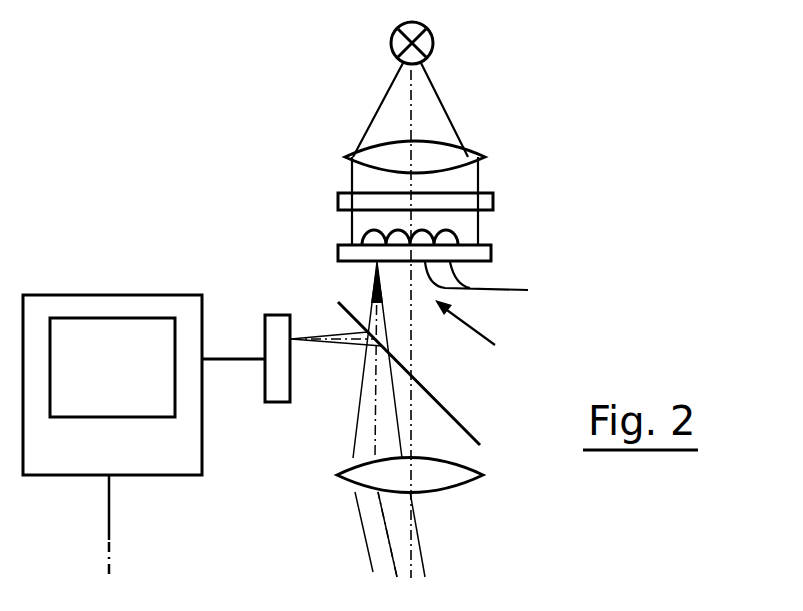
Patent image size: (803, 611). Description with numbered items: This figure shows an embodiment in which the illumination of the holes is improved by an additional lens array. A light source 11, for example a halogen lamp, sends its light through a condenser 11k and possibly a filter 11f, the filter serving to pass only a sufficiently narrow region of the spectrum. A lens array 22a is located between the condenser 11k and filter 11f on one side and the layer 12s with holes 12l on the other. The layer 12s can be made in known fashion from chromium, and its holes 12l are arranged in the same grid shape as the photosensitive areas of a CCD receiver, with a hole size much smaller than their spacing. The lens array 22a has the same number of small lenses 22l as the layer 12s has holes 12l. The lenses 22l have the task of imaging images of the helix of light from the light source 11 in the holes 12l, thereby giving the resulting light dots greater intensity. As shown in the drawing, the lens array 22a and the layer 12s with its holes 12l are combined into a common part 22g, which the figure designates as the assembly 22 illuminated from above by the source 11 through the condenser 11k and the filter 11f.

The light source 11 is at (434, 43).
The condenser 11k is at (445, 144).
The filter 11f is at (486, 202).
The microlens array unit 22 is at (488, 338).
The lens array 22a is at (345, 221).
The common part 22g is at (338, 255).
The small lenses 22l is at (447, 228).
The holes 12l is at (498, 284).
The layer 12s is at (346, 262).